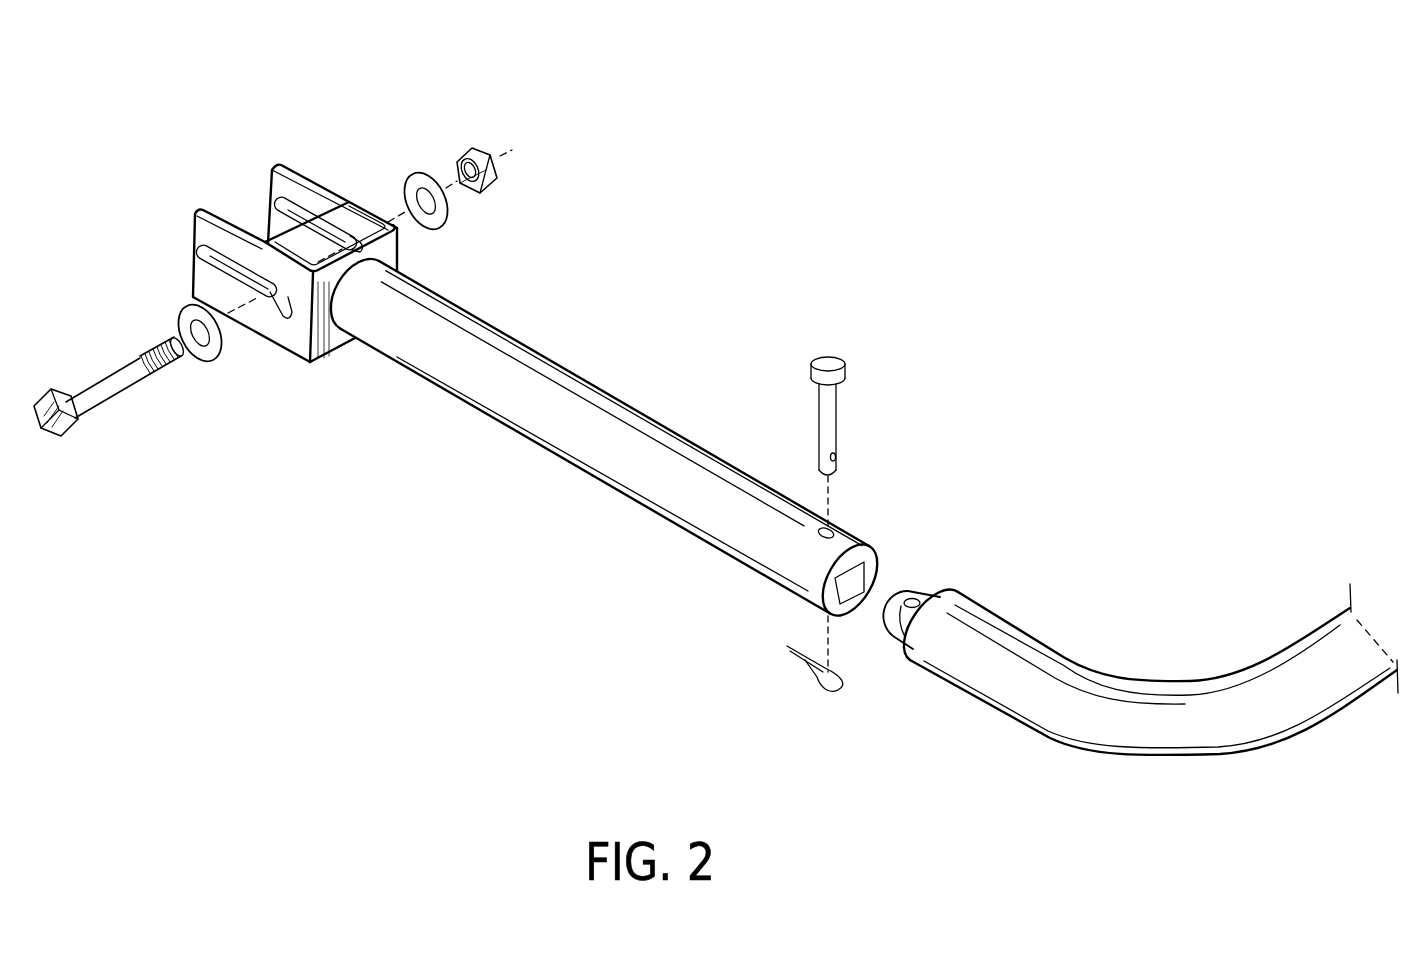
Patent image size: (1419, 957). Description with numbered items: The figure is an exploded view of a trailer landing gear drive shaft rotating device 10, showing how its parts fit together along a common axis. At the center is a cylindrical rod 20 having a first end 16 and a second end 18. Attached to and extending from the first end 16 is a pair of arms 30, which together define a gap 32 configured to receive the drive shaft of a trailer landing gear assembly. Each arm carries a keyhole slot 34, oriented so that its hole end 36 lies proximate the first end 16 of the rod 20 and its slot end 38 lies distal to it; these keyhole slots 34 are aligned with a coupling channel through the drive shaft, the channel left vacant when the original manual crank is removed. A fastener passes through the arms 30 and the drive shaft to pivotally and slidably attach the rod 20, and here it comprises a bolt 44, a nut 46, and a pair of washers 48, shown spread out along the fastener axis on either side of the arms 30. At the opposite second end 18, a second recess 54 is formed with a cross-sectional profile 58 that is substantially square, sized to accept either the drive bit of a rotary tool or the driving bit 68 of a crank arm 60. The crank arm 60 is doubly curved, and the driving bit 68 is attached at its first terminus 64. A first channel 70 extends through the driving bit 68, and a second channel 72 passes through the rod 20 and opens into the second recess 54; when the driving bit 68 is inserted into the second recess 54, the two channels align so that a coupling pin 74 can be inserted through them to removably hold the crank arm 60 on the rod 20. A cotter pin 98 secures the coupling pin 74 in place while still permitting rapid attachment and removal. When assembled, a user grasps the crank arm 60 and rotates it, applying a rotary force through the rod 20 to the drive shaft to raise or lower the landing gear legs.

The trailer landing gear drive shaft rotating device 10 is at (999, 288).
The first end 16 is at (345, 278).
The second end 18 is at (820, 564).
The rod 20 is at (550, 452).
The pair of arms 30 is at (304, 265).
The gap 32 is at (243, 195).
The keyhole slot 34 is at (300, 232).
The hole end 36 is at (312, 360).
The slot end 38 is at (200, 253).
The bolt 44 is at (103, 395).
The nut 46 is at (490, 167).
The pair of washers 48 is at (213, 353).
The second recess 54 is at (877, 572).
The cross-sectional profile 58 is at (918, 600).
The crank arm 60 is at (1151, 689).
The first terminus 64 is at (1000, 653).
The driving bit 68 is at (898, 635).
The first channel 70 is at (956, 612).
The second channel 72 is at (822, 530).
The coupling pin 74 is at (833, 428).
The cotter pin 98 is at (818, 672).